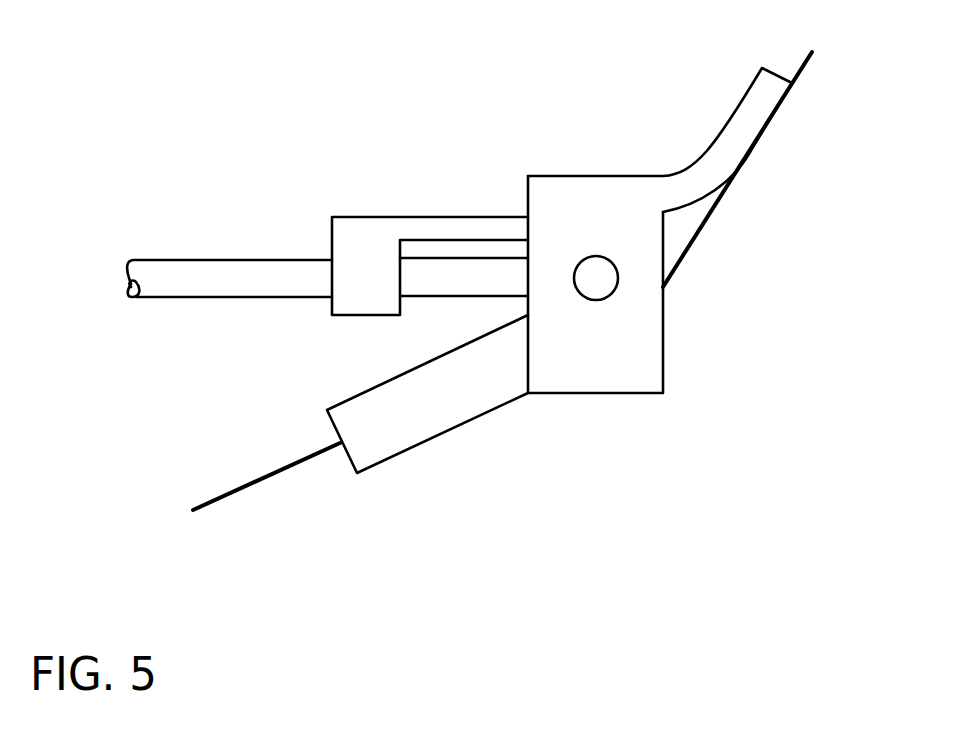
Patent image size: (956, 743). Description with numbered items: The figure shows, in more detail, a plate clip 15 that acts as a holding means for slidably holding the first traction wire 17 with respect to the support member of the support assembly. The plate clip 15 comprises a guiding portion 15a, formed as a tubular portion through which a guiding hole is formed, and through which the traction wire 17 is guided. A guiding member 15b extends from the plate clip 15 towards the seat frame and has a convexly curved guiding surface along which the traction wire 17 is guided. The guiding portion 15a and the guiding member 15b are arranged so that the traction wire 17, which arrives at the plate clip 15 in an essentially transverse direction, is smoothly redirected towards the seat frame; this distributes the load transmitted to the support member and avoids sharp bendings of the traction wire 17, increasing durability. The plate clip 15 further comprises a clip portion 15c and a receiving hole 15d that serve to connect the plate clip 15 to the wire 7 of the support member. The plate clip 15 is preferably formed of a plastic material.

The plate clip 15 is at (222, 104).
The guiding portion 15a is at (465, 423).
The guiding member 15b is at (730, 123).
The clip portion 15c is at (424, 217).
The receiving hole 15d is at (615, 288).
The wire 7 is at (203, 296).
The first traction wire 17 is at (720, 208).